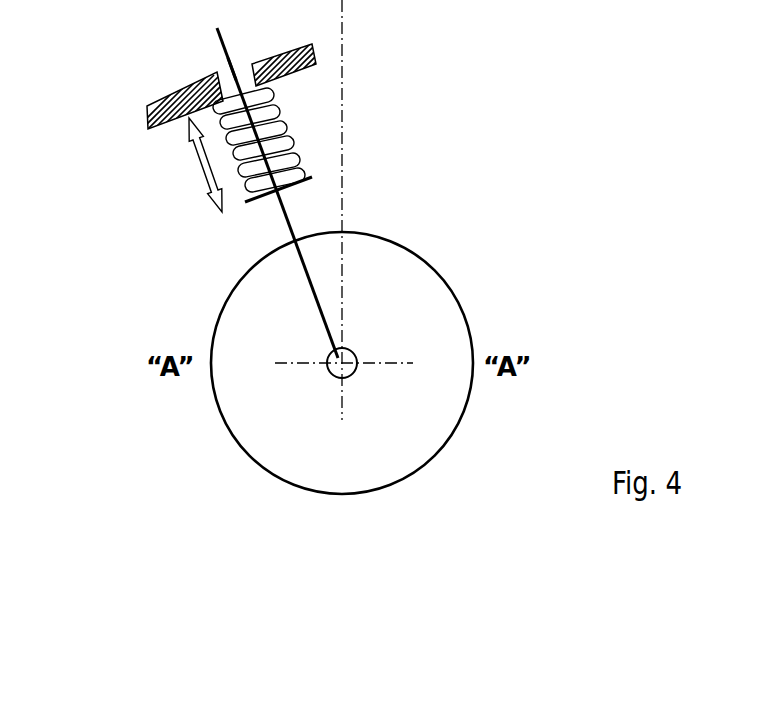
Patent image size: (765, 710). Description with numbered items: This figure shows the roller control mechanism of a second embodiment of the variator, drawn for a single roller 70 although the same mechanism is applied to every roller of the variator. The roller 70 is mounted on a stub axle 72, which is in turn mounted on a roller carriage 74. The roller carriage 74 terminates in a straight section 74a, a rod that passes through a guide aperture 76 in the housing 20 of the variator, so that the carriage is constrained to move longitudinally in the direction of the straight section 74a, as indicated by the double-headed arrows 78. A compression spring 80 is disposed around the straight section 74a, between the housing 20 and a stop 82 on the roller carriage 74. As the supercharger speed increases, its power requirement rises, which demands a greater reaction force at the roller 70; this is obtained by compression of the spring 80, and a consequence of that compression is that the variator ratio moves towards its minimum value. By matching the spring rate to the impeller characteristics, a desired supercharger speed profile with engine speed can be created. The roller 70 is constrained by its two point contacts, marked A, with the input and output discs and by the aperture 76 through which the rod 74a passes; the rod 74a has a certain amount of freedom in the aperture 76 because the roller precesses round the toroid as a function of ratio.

The housing 20 is at (150, 109).
The roller 70 is at (413, 273).
The stub axle 72 is at (355, 370).
The roller carriage 74 is at (298, 258).
The straight section 74a is at (223, 52).
The guide aperture 76 is at (242, 72).
The arrows 78 is at (200, 162).
The compression spring 80 is at (283, 127).
The stop 82 is at (292, 185).